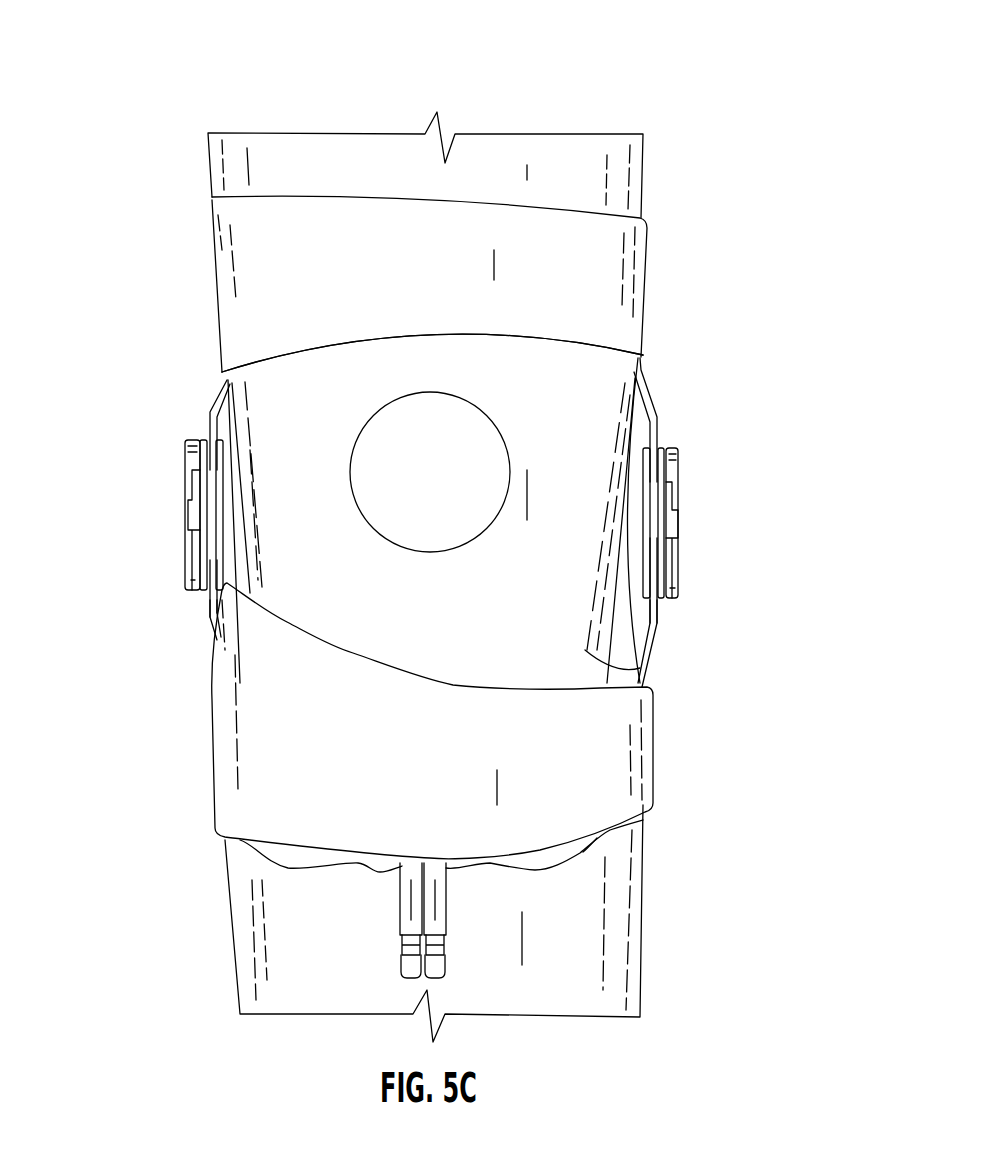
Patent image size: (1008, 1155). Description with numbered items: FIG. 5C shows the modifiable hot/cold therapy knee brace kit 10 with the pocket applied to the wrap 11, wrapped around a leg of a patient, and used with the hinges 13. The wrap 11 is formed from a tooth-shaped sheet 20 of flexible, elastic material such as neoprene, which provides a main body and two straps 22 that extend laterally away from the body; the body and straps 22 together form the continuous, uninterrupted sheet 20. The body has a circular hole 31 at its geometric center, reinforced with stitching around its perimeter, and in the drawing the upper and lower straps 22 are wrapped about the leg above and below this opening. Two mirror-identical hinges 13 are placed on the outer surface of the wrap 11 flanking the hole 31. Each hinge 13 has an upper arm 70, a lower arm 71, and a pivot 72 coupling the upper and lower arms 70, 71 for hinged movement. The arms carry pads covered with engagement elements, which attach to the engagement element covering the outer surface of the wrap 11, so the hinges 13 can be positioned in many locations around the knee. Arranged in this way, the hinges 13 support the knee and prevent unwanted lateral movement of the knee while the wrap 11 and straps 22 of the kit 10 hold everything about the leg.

The kit 10 is at (467, 521).
The wrap 11 is at (231, 178).
The hinge 13 is at (433, 525).
The sheet 20 is at (492, 508).
The strap 22 is at (638, 292).
The circular hole 31 is at (444, 482).
The upper arm 70 is at (216, 388).
The lower arm 71 is at (210, 633).
The pivot 72 is at (183, 582).